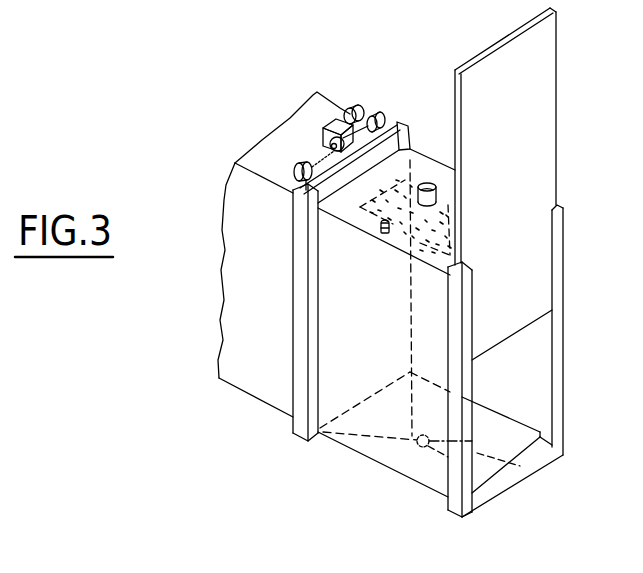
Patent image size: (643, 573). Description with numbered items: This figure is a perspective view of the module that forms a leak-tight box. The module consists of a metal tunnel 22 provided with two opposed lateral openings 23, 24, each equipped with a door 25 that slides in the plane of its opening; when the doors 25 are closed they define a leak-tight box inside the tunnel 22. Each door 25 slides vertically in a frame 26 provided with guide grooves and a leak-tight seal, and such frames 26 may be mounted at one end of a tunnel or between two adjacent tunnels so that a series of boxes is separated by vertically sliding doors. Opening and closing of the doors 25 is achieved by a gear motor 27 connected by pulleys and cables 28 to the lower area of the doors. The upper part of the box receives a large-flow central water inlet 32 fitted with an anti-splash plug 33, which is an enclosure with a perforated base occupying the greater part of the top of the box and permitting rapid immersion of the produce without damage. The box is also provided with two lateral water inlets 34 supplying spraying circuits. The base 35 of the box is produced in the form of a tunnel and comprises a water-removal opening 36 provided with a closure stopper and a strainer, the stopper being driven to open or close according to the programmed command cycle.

The metal tunnel 22 is at (318, 112).
The lateral opening 23 is at (528, 393).
The lateral opening 24 is at (340, 342).
The door 25 is at (389, 117).
The frame 26 is at (557, 280).
The gear motor 27 is at (350, 113).
The pulleys and cables 28 is at (295, 173).
The central water inlet 32 is at (453, 168).
The anti-splash plug 33 is at (428, 182).
The lateral water inlet 34 is at (384, 233).
The base 35 is at (374, 455).
The water-removal opening 36 is at (420, 448).